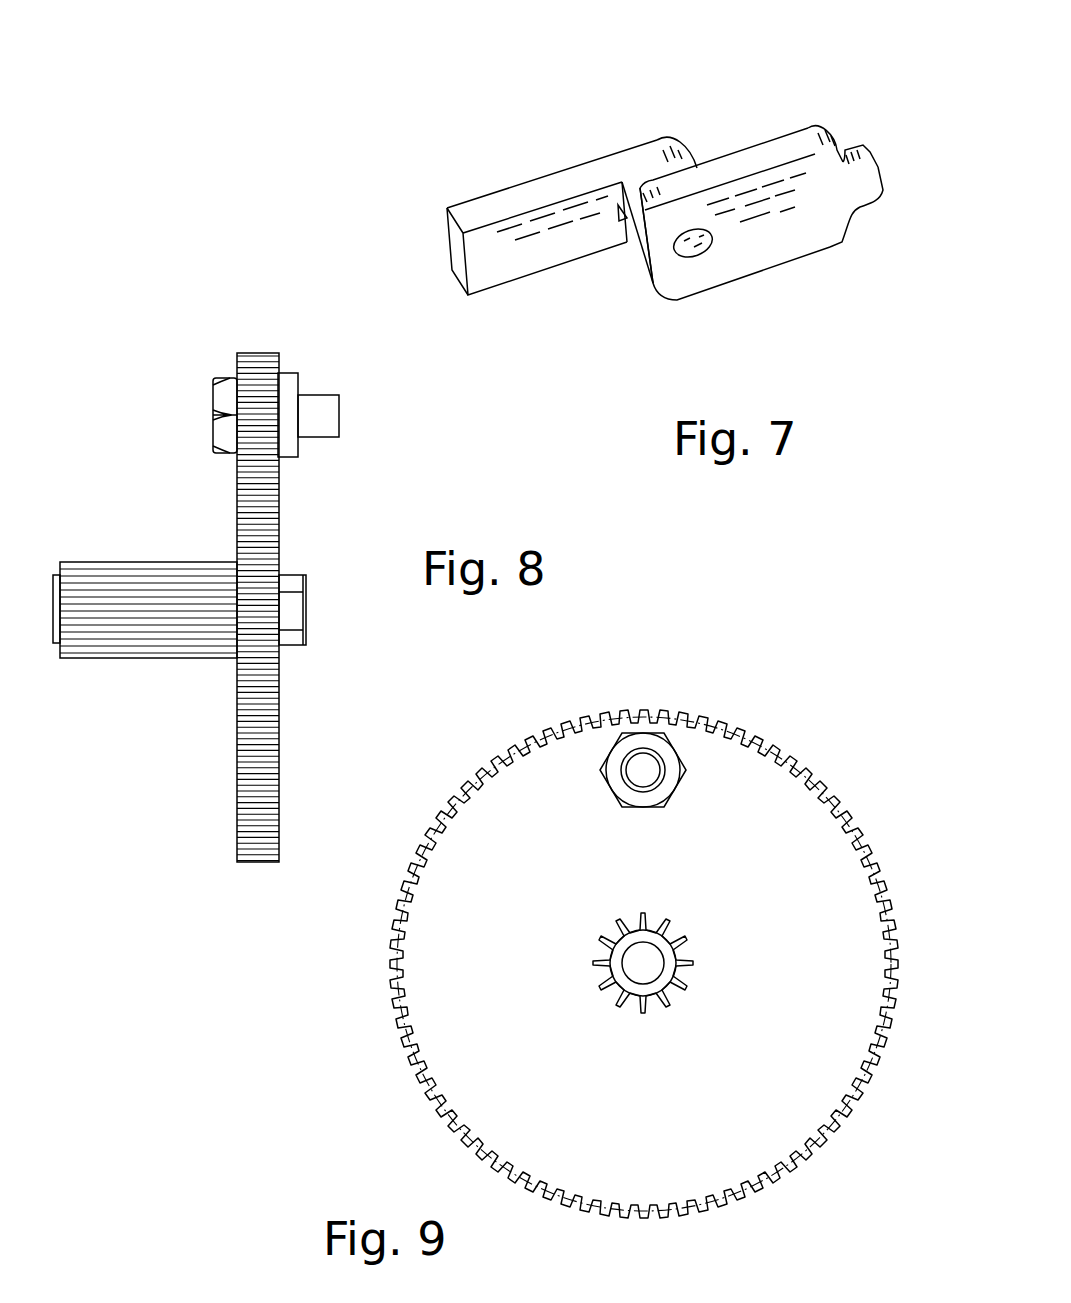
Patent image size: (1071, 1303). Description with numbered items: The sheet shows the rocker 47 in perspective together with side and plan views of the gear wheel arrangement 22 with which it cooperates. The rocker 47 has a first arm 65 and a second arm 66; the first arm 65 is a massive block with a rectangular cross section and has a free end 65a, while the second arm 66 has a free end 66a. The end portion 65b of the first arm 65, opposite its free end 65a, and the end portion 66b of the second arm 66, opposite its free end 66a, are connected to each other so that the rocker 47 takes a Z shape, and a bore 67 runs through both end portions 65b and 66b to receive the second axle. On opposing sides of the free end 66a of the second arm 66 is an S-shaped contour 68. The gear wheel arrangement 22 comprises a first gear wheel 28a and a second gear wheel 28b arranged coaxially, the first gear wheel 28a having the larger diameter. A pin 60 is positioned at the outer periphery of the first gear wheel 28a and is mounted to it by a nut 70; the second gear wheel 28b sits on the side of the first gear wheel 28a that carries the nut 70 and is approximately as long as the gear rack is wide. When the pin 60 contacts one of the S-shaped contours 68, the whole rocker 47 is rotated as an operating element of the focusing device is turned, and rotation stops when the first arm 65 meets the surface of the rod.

In FIG. 8, the gear wheel arrangement 22 is at (136, 478).
In FIG. 9, the gear wheel arrangement 22 is at (472, 1031).
In FIG. 8, the first gear wheel 28a is at (262, 830).
In FIG. 9, the first gear wheel 28a is at (768, 840).
In FIG. 8, the second gear wheel 28b is at (122, 637).
In FIG. 9, the second gear wheel 28b is at (670, 985).
In FIG. 7, the rocker 47 is at (522, 143).
In FIG. 8, the pin 60 is at (320, 417).
In FIG. 7, the first arm 65 is at (557, 228).
In FIG. 7, the free end 65a is at (447, 252).
In FIG. 7, the end portion 65b is at (697, 155).
In FIG. 7, the second arm 66 is at (742, 198).
In FIG. 7, the free end 66a is at (878, 157).
In FIG. 7, the end portion 66b is at (640, 240).
In FIG. 7, the bore 67 is at (690, 256).
In FIG. 7, the S-shaped contour 68 is at (837, 150).
In FIG. 8, the nut 70 is at (222, 410).
In FIG. 9, the nut 70 is at (667, 757).